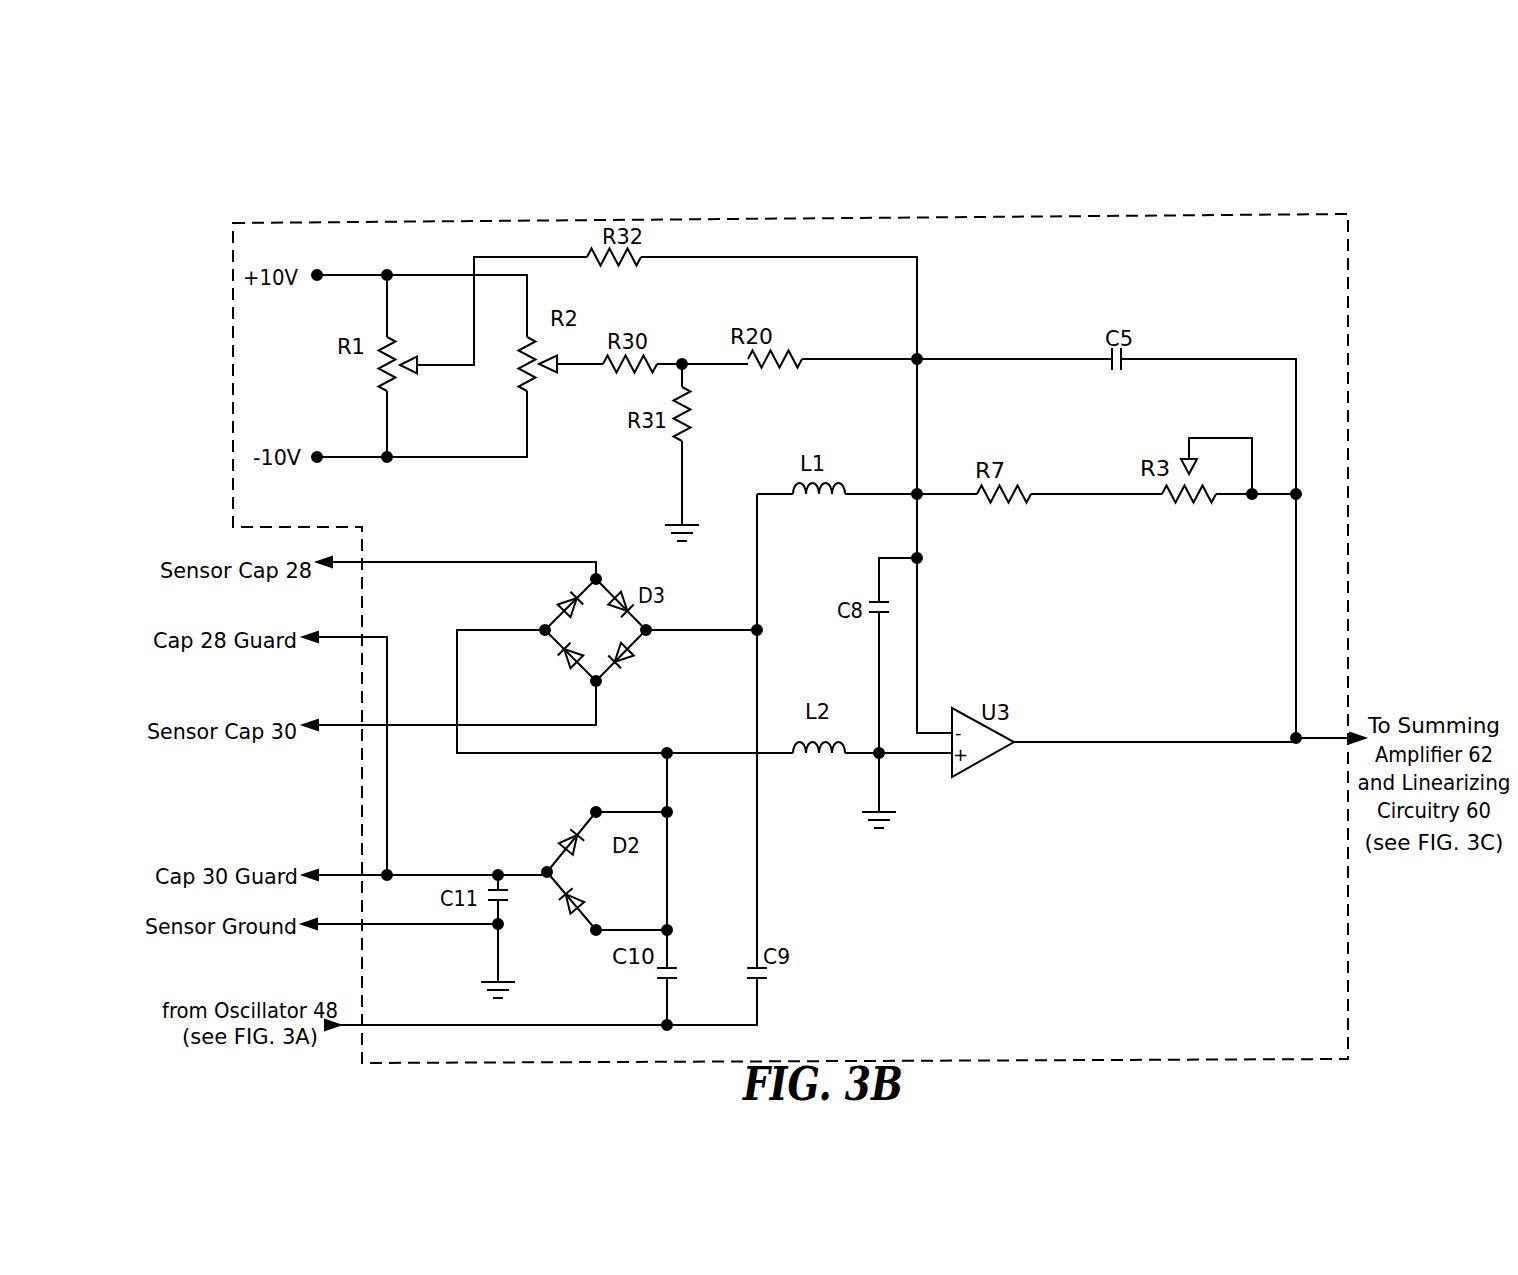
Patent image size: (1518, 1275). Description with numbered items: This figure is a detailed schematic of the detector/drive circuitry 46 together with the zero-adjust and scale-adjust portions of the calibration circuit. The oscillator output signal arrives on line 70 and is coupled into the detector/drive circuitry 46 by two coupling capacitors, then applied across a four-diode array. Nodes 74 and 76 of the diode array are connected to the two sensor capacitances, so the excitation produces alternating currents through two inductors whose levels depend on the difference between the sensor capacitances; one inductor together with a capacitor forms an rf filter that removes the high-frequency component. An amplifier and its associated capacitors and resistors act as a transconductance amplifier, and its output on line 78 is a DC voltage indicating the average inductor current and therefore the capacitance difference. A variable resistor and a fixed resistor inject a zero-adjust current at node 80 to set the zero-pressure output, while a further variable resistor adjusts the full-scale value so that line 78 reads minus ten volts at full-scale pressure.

The detector/drive circuitry 46 is at (1153, 1041).
The line 70 is at (386, 1028).
The node 74 is at (600, 684).
The node 76 is at (590, 576).
The line 78 is at (1333, 733).
The node 80 is at (915, 488).